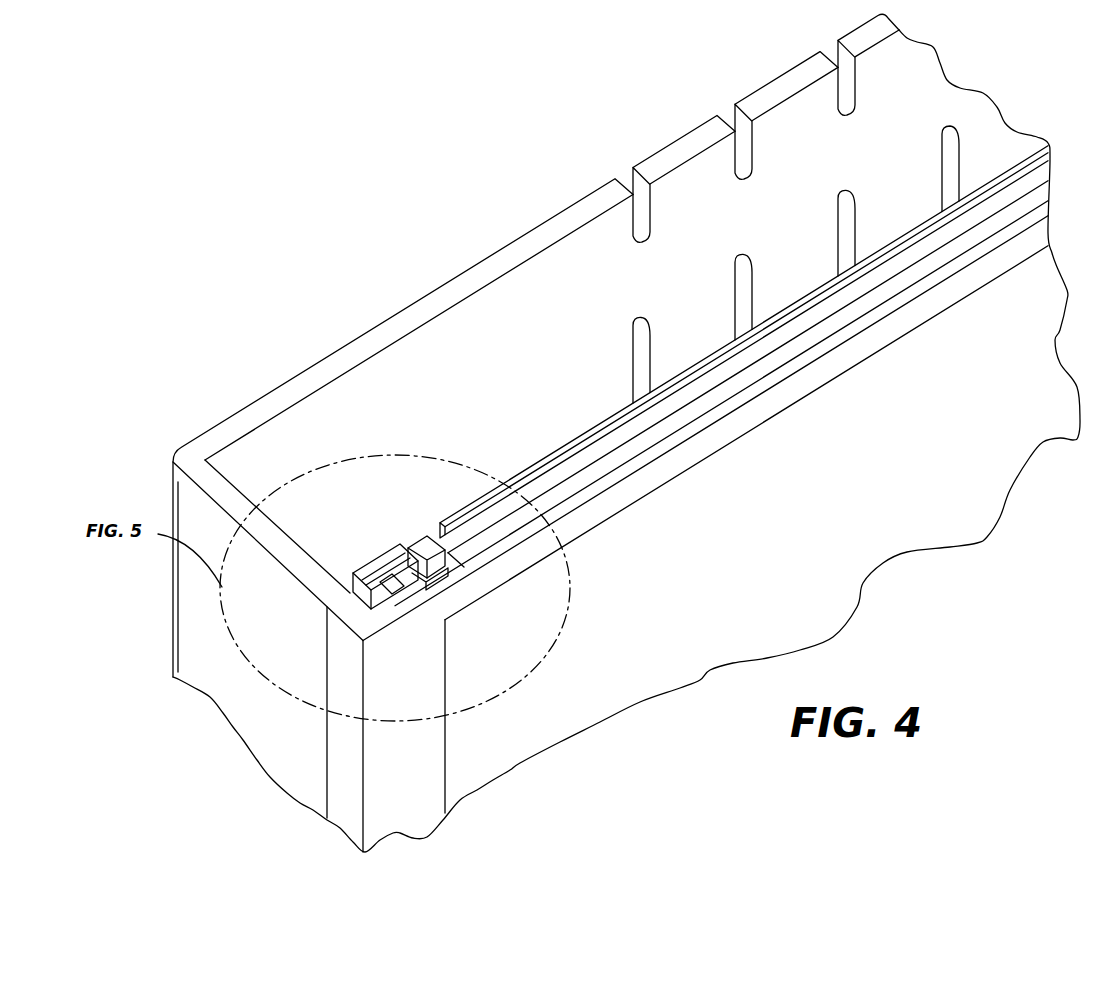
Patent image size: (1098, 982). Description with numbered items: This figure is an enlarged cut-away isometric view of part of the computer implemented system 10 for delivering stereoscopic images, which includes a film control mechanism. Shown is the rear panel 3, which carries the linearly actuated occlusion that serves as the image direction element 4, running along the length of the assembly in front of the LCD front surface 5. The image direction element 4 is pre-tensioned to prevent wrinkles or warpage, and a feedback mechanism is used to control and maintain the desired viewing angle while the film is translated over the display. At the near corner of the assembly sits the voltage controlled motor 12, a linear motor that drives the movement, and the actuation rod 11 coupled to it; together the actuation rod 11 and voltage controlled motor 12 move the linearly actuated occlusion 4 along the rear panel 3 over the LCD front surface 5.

The computer implemented system 10 is at (324, 188).
The rear panel 3 is at (417, 380).
The image direction element 4 is at (518, 480).
The LCD front surface 5 is at (762, 542).
The actuation rod 11 is at (437, 553).
The voltage controlled motor 12 is at (382, 583).